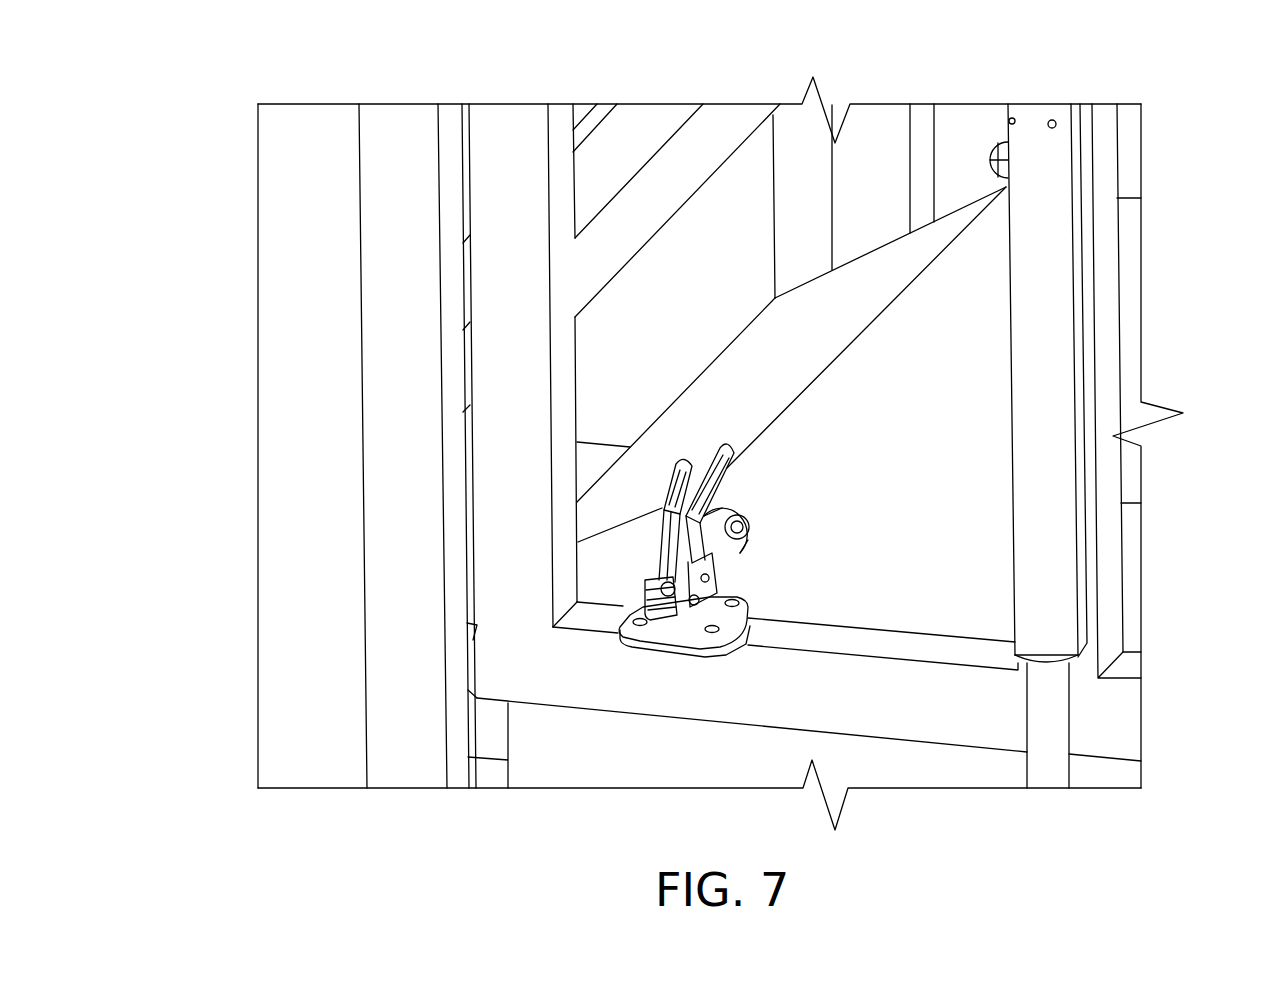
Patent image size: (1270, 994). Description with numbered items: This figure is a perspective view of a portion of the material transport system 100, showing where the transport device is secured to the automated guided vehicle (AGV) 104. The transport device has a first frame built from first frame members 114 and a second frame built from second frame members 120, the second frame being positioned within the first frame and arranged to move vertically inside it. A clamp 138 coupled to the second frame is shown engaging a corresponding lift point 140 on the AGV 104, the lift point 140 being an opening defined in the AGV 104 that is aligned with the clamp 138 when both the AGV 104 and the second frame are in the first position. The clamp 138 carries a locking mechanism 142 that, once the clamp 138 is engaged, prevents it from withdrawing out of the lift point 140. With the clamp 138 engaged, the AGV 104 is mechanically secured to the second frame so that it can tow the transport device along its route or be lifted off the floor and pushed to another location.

The material transport system 100 is at (232, 129).
The automated guided vehicle (AGV) 104 is at (947, 383).
The first frame member 114 is at (815, 202).
The second frame member 120 is at (897, 648).
The clamp 138 is at (655, 530).
The lift point 140 is at (748, 508).
The locking mechanism 142 is at (730, 457).